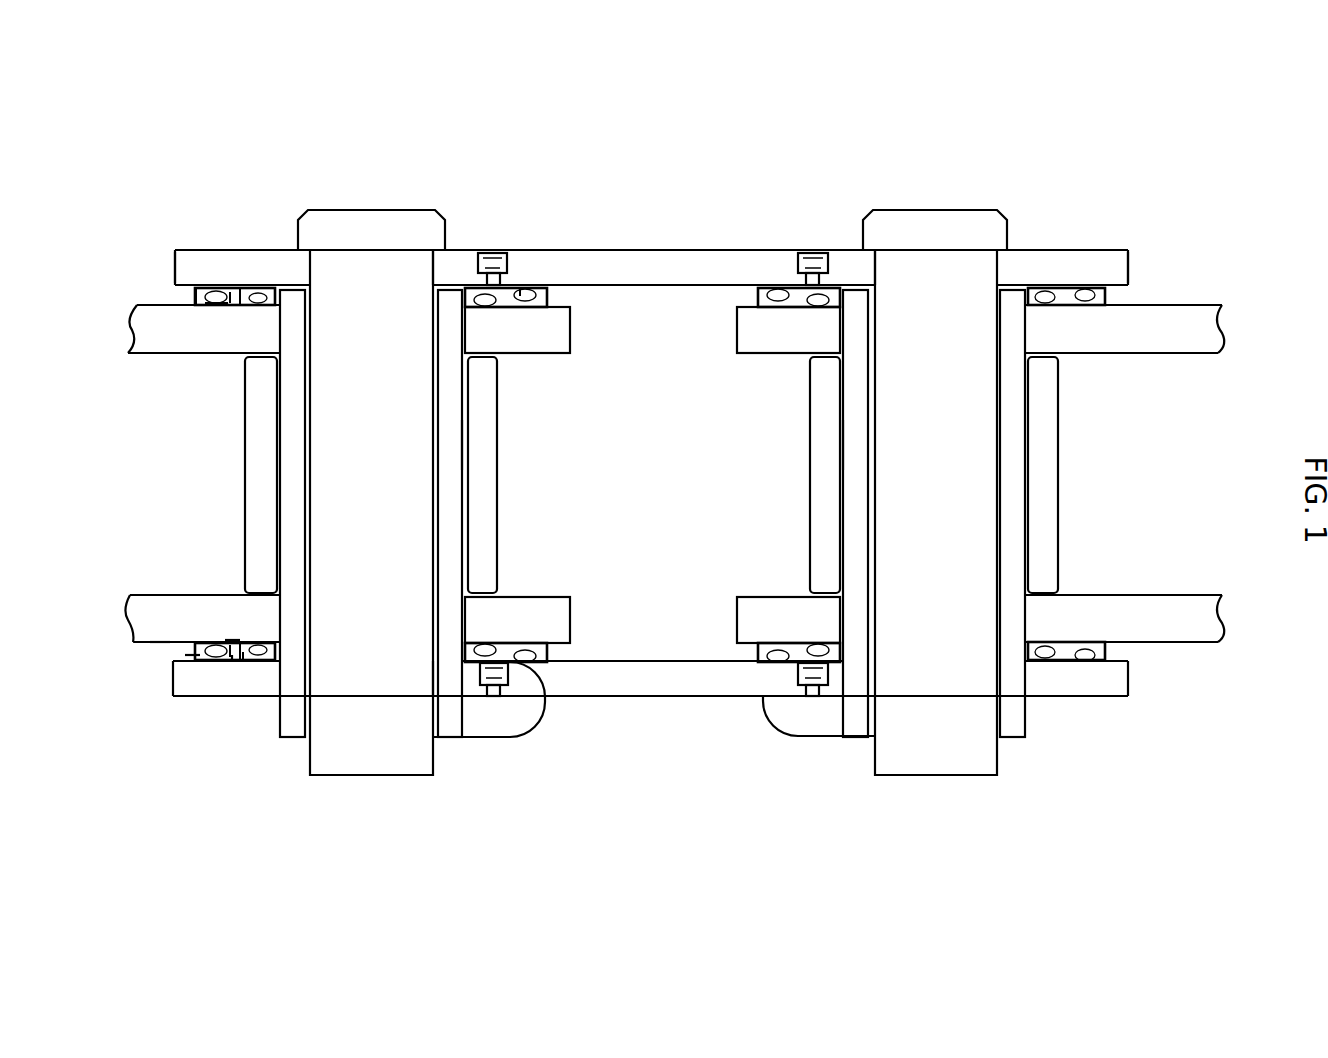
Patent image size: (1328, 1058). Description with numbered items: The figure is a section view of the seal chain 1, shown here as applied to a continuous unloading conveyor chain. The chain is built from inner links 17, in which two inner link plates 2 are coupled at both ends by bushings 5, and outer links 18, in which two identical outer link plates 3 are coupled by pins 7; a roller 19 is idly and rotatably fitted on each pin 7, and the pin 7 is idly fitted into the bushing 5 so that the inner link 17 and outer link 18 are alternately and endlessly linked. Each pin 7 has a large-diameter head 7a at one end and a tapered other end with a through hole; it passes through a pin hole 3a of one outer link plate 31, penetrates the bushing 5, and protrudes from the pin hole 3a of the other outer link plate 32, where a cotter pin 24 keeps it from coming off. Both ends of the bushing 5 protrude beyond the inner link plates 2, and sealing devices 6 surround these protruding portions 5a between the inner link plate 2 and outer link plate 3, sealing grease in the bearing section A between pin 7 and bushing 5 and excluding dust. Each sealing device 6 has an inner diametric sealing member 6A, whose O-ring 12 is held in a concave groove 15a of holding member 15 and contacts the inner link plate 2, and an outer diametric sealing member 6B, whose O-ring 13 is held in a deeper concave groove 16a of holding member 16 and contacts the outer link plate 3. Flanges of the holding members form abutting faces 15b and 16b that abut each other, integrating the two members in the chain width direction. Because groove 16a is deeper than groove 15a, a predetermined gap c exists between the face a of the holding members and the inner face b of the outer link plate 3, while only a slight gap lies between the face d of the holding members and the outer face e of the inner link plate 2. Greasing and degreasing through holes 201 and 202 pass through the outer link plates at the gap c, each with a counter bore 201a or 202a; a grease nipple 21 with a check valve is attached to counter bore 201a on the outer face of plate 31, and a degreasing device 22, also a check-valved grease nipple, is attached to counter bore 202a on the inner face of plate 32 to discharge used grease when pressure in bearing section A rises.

The seal chain 1 is at (598, 170).
The inner link plate 2 is at (150, 318).
The outer link plate 3 is at (650, 479).
The outer link plate 31 is at (651, 267).
The outer link plate 32 is at (650, 678).
The pin hole 3a is at (432, 270).
The bushing 5 is at (282, 445).
The protruding portion of bushing 5a is at (300, 300).
The sealing device 6 is at (505, 408).
The inner diametric sealing member 6A is at (490, 305).
The outer diametric sealing member 6B is at (530, 305).
The pin 7 is at (330, 495).
The head 7a is at (352, 228).
The O-ring 12 is at (262, 297).
The O-ring 13 is at (225, 292).
The inner diametric holding member 15 is at (240, 307).
The concave groove 15a is at (285, 307).
The abutting face 15b is at (235, 295).
The outer diametric holding member 16 is at (175, 322).
The concave groove 16a is at (215, 287).
The abutting face 16b is at (235, 307).
The inner link 17 is at (147, 262).
The outer link 18 is at (722, 212).
The roller 19 is at (490, 495).
The greasing through hole 201 is at (505, 265).
The counter bore 201a is at (482, 258).
The degreasing through hole 202 is at (500, 690).
The counter bore 202a is at (480, 662).
The grease nipple 21 is at (492, 265).
The degreasing device 22 is at (520, 665).
The cotter pin 24 is at (292, 737).
The bearing section A is at (445, 450).
The face a is at (235, 658).
The inner face b is at (190, 655).
The gap c is at (520, 288).
The face d is at (230, 640).
The outer face e is at (160, 645).